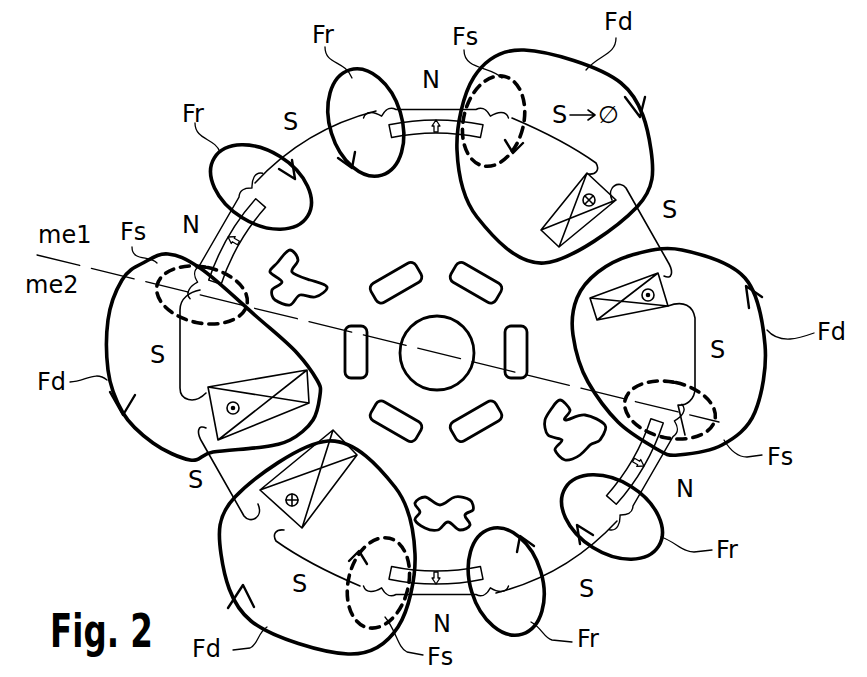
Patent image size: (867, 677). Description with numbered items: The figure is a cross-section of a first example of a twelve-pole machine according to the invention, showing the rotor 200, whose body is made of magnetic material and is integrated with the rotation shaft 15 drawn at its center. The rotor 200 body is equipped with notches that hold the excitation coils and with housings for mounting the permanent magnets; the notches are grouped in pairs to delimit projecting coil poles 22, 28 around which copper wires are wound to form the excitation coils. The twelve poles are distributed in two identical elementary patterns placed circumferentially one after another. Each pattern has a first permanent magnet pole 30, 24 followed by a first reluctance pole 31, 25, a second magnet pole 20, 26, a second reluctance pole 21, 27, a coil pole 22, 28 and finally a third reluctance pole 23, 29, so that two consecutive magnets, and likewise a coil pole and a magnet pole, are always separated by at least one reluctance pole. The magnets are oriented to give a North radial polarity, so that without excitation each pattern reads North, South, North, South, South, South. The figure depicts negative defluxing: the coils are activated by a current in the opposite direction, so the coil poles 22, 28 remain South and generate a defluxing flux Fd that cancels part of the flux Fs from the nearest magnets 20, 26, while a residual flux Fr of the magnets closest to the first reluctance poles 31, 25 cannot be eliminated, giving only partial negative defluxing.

The rotation shaft 15 is at (452, 366).
The second magnet pole 20 is at (408, 102).
The second reluctance pole 21 is at (644, 132).
The coil pole 22 is at (662, 238).
The third reluctance pole 23 is at (677, 330).
The first permanent magnet pole 24 is at (681, 460).
The first reluctance pole 25 is at (594, 557).
The second magnet pole 26 is at (465, 600).
The second reluctance pole 27 is at (330, 570).
The coil pole 28 is at (230, 487).
The third reluctance pole 29 is at (177, 337).
The first permanent magnet pole 30 is at (218, 213).
The first reluctance pole 31 is at (322, 133).
The rotor 200 is at (672, 176).